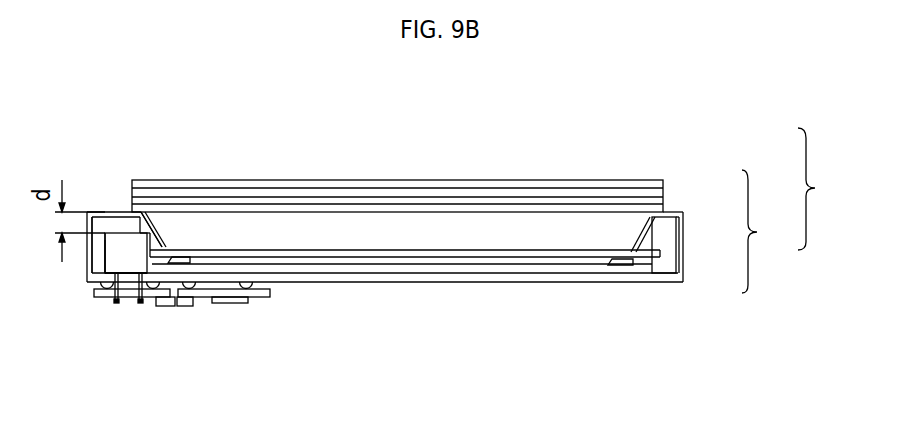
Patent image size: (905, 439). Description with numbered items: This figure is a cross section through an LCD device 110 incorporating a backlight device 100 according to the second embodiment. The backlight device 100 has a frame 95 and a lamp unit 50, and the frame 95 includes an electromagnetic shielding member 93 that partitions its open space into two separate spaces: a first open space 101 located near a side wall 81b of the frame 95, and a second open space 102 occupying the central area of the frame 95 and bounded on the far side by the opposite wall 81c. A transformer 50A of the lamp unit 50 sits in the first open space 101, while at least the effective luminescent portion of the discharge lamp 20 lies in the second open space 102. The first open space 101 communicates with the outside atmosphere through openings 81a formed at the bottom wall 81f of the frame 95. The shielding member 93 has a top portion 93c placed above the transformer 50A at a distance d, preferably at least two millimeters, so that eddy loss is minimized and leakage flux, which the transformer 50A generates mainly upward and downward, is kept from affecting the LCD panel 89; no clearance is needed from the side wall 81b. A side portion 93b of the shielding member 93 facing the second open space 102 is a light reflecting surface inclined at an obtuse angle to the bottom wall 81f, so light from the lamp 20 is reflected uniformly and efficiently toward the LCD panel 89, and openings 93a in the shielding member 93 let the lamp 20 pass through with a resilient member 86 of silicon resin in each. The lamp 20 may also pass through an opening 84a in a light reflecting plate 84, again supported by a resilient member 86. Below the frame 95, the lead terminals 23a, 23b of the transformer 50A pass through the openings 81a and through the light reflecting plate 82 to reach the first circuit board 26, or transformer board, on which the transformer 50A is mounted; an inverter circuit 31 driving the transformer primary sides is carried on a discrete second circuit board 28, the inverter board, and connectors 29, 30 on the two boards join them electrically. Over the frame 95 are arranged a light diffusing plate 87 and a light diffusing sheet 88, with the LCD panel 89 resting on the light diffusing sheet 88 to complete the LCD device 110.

The discharge lamp 20 is at (447, 252).
The lead terminal 23a is at (116, 304).
The lead terminal 23b is at (140, 304).
The first circuit board 26 is at (102, 299).
The second circuit board 28 is at (264, 298).
The connector 29 is at (163, 307).
The connector 30 is at (192, 307).
The inverter circuit 31 is at (238, 304).
The lamp unit 50 is at (122, 228).
The transformer 50A is at (104, 252).
The opening 81a is at (128, 278).
The side wall 81b is at (89, 281).
The chassis side wall 81c is at (684, 278).
The bottom wall 81f is at (361, 278).
The light reflecting plate 82 is at (541, 265).
The light reflecting plate 84 is at (662, 222).
The opening 84a is at (644, 214).
The resilient member 86 is at (175, 257).
The light diffusing plate 87 is at (664, 204).
The light diffusing sheet 88 is at (664, 193).
The LCD panel 89 is at (664, 181).
The electromagnetic shielding member 93 is at (103, 218).
The opening 93a is at (160, 222).
The side portion 93b is at (152, 212).
The top portion 93c is at (97, 218).
The frame 95 is at (688, 249).
The backlight device 100 is at (772, 231).
The first open space 101 is at (113, 230).
The second open space 102 is at (385, 222).
The LCD device 110 is at (828, 189).